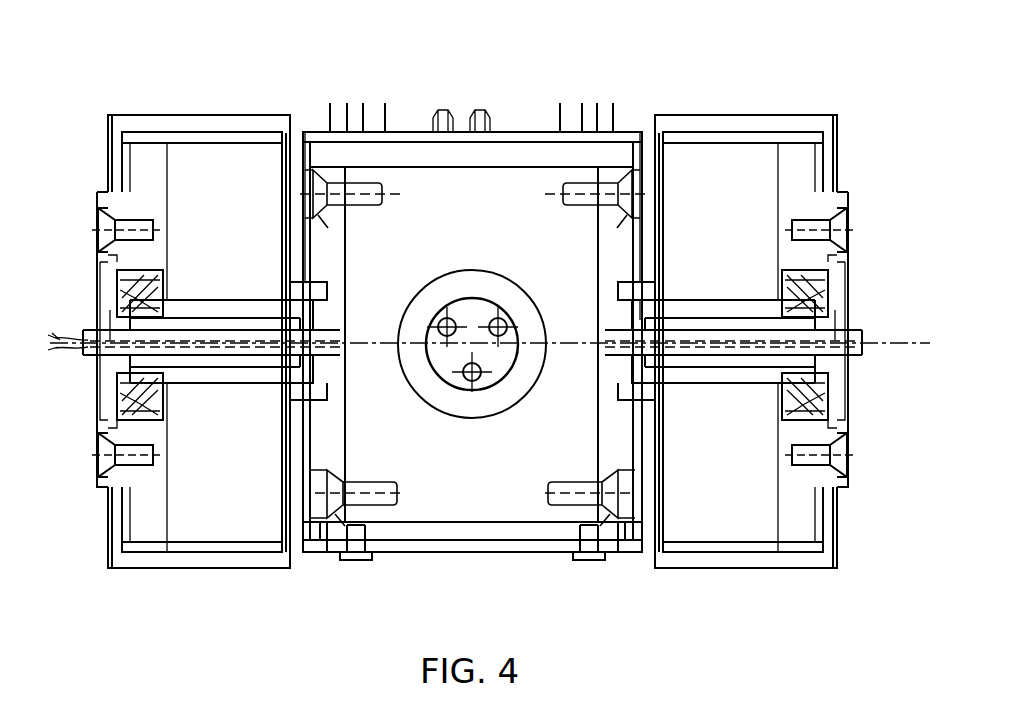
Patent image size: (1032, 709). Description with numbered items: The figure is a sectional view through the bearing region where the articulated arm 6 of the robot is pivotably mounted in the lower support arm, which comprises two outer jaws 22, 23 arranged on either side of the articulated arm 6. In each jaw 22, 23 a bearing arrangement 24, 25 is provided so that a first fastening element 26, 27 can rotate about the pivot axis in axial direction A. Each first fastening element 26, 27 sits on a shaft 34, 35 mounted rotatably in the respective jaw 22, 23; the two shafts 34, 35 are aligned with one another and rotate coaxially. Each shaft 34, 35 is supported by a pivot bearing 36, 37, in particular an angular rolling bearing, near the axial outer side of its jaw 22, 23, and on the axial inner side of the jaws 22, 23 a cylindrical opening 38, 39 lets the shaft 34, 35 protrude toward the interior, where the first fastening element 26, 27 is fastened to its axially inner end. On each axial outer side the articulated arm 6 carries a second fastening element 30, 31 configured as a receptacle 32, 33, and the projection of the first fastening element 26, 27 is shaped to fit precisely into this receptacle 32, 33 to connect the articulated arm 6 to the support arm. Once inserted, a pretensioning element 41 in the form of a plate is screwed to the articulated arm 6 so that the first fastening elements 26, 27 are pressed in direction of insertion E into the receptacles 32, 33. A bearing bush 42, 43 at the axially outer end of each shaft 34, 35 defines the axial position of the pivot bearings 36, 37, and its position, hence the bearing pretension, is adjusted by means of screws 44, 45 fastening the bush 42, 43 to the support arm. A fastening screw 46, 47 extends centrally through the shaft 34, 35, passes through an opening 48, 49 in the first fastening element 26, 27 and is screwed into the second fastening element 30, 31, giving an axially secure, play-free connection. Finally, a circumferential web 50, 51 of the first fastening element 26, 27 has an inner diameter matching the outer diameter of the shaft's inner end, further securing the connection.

The articulated arm 6 is at (508, 104).
The outer jaw 22 is at (207, 98).
The outer jaw 23 is at (737, 98).
The bearing arrangement 24 is at (84, 311).
The bearing arrangement 25 is at (861, 311).
The first fastening element 26 is at (305, 558).
The first fastening element 27 is at (635, 555).
The second fastening element 30 is at (310, 128).
The second fastening element 31 is at (635, 128).
The receptacle 32 is at (303, 290).
The receptacle 33 is at (655, 268).
The shaft 34 is at (203, 380).
The shaft 35 is at (742, 380).
The pivot bearing 36 is at (141, 270).
The pivot bearing 37 is at (840, 262).
The cylindrical opening 38 is at (282, 397).
The cylindrical opening 39 is at (663, 397).
The pretensioning element 41 is at (416, 553).
The bearing bush 42 is at (117, 483).
The bearing bush 43 is at (840, 420).
The screw 44 is at (96, 225).
The screw 45 is at (850, 225).
The fastening screw 46 is at (95, 348).
The fastening screw 47 is at (820, 346).
The opening 48 is at (327, 325).
The opening 49 is at (660, 312).
The circumferential web 50 is at (283, 415).
The circumferential web 51 is at (650, 285).